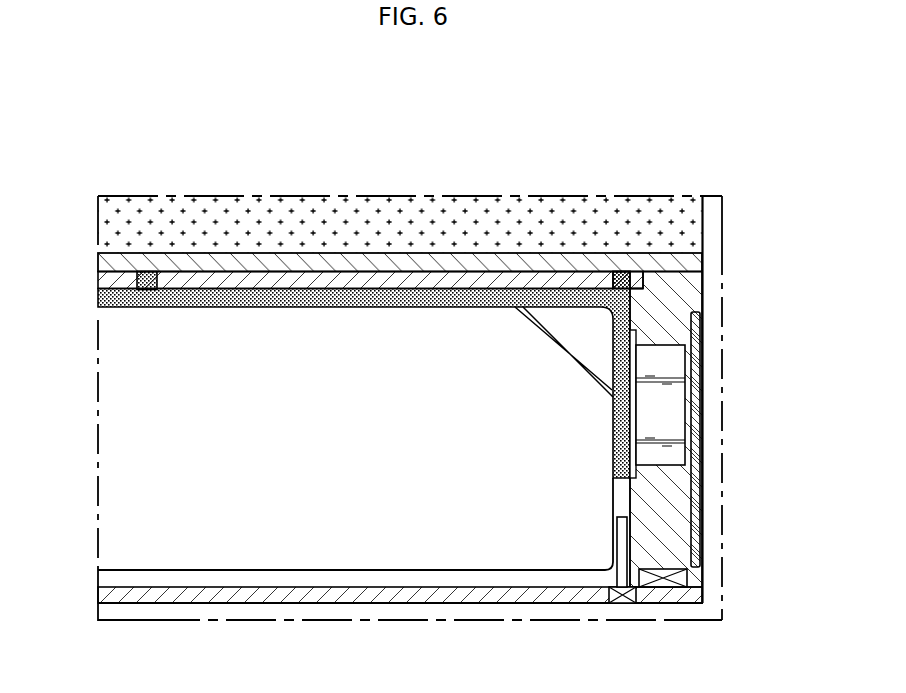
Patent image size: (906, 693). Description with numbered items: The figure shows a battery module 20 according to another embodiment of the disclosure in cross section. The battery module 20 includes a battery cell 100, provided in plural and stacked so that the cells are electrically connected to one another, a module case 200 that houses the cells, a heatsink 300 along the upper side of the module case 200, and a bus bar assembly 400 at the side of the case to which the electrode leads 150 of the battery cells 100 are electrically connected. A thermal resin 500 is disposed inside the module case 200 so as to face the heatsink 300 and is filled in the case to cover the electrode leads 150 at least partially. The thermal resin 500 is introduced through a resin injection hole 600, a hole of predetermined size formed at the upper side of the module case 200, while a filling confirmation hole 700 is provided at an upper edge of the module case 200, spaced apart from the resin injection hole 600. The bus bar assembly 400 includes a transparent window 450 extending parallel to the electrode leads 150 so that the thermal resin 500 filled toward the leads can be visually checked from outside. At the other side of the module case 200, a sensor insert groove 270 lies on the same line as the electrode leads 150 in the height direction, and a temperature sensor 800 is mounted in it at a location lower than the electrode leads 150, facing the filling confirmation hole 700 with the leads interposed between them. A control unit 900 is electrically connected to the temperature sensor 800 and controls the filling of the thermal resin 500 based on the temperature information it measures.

The battery module 20 is at (200, 142).
The battery cell 100 is at (106, 447).
The electrode lead 150 is at (672, 404).
The module case 200 is at (106, 281).
The sensor insert groove 270 is at (615, 604).
The heatsink 300 is at (708, 215).
The bus bar assembly 400 is at (710, 447).
The transparent window 450 is at (700, 497).
The thermal resin 500 is at (106, 297).
The resin injection hole 600 is at (147, 271).
The filling confirmation hole 700 is at (620, 271).
The temperature sensor 800 is at (625, 604).
The control unit 900 is at (687, 578).